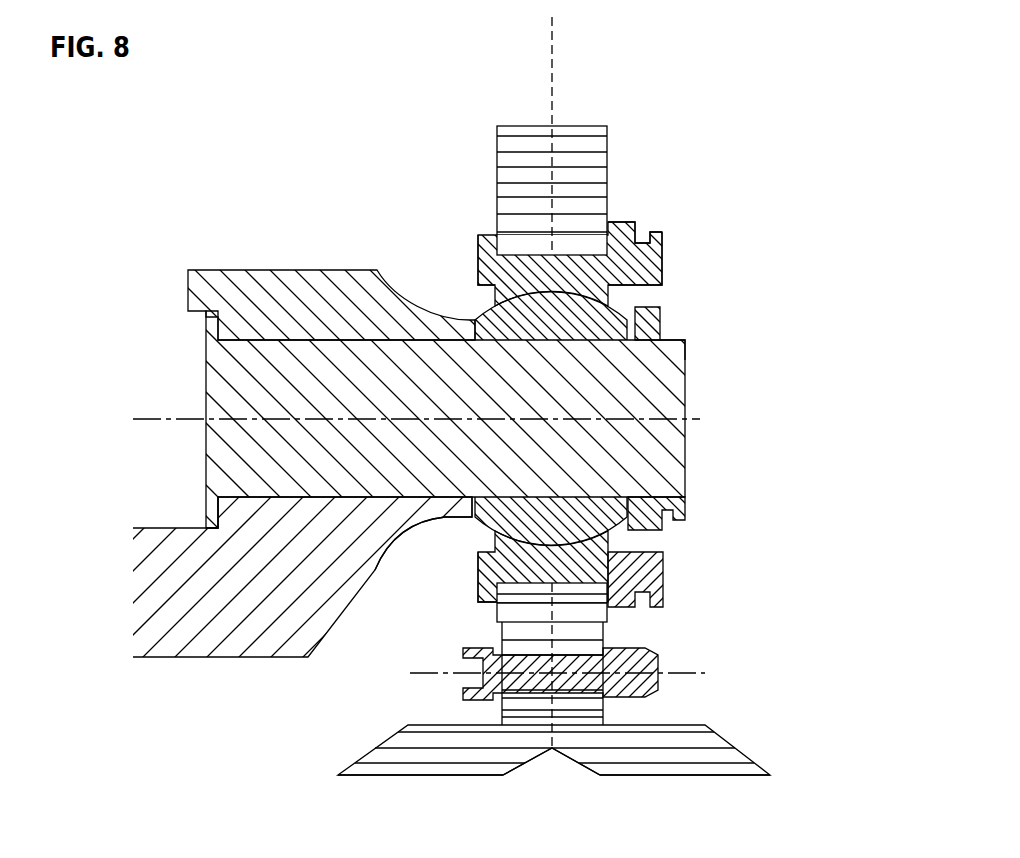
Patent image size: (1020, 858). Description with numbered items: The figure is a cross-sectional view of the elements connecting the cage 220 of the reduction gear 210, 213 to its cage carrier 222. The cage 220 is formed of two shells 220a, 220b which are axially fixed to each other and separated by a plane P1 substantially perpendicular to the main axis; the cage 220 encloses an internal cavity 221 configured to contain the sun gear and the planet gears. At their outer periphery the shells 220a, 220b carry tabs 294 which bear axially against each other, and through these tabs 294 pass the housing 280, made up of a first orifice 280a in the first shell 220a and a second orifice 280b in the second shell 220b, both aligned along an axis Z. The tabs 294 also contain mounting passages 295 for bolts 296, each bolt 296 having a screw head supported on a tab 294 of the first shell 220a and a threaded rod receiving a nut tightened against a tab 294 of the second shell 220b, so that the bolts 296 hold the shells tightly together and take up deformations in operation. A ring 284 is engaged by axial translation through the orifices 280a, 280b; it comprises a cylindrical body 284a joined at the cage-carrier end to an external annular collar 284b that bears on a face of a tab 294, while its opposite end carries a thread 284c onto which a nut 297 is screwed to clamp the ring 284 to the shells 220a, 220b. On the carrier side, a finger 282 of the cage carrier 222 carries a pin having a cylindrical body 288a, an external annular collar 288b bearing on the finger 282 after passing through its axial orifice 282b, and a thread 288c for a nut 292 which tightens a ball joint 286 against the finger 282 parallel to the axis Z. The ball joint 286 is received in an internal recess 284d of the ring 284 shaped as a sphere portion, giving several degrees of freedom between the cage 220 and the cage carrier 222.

The plane P1 is at (553, 30).
The axis Z is at (151, 418).
The reduction gear 210 is at (810, 54).
The hinge assembly 213 is at (748, 68).
The cage 220 is at (610, 104).
The first shell 220a is at (392, 790).
The second shell 220b is at (694, 790).
The internal cavity 221 is at (551, 787).
The cage carrier 222 is at (249, 258).
The housing 280 is at (562, 250).
The first orifice 280a is at (514, 258).
The second orifice 280b is at (586, 256).
The finger 282 is at (228, 657).
The axial orifice 282b is at (366, 490).
The ring 284 is at (553, 558).
The cylindrical body 284a is at (571, 578).
The external annular collar 284b is at (480, 595).
The thread 284c is at (640, 580).
The internal recess 284d is at (585, 314).
The ball joint 286 is at (605, 518).
The cylindrical body 288a is at (368, 375).
The external annular collar 288b is at (207, 516).
The thread 288c is at (666, 340).
The nut 292 is at (652, 318).
The tab 294 is at (508, 136).
The mounting passage 295 is at (573, 697).
The bolt 296 is at (640, 668).
The nut 297 is at (636, 235).